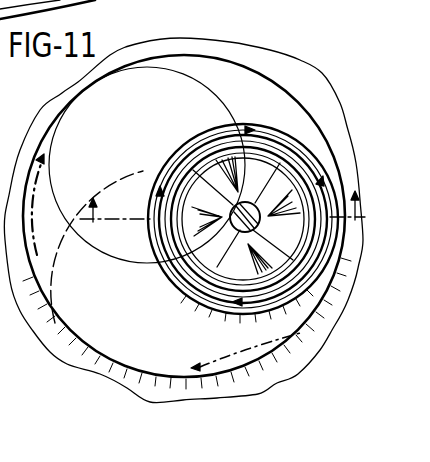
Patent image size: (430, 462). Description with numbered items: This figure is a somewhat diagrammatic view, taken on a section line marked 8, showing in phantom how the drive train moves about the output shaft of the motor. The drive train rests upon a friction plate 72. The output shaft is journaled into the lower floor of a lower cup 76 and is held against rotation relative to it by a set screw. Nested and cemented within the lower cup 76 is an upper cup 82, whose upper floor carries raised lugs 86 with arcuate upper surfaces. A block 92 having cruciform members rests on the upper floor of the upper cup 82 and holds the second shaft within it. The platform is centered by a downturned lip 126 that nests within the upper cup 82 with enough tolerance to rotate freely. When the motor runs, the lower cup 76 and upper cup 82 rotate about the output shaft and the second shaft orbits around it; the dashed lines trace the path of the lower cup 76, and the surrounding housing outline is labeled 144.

The housing 144 is at (181, 220).
The friction plate 72 is at (280, 350).
The raised lugs 86 is at (213, 128).
The downturned lip 126 is at (283, 153).
The upper cup 82 is at (293, 150).
The lower cup 76 is at (320, 158).
The block 92 is at (285, 178).
The section line 8- 8 is at (222, 219).